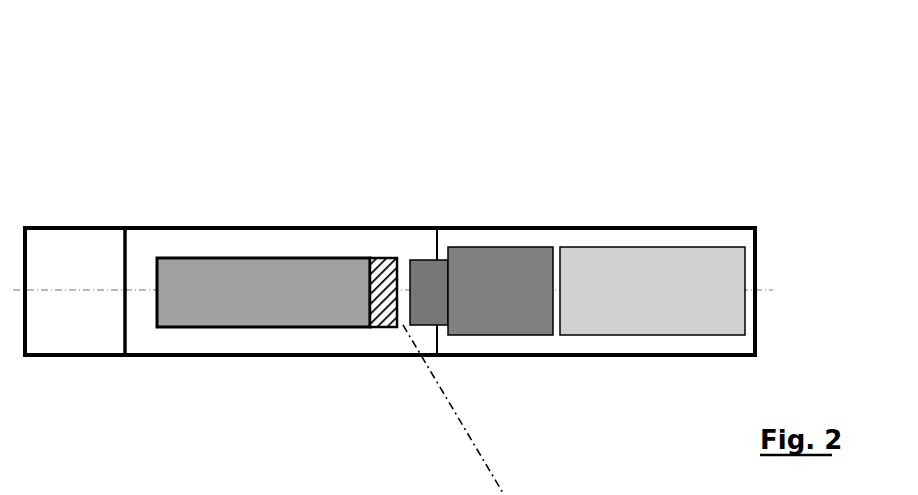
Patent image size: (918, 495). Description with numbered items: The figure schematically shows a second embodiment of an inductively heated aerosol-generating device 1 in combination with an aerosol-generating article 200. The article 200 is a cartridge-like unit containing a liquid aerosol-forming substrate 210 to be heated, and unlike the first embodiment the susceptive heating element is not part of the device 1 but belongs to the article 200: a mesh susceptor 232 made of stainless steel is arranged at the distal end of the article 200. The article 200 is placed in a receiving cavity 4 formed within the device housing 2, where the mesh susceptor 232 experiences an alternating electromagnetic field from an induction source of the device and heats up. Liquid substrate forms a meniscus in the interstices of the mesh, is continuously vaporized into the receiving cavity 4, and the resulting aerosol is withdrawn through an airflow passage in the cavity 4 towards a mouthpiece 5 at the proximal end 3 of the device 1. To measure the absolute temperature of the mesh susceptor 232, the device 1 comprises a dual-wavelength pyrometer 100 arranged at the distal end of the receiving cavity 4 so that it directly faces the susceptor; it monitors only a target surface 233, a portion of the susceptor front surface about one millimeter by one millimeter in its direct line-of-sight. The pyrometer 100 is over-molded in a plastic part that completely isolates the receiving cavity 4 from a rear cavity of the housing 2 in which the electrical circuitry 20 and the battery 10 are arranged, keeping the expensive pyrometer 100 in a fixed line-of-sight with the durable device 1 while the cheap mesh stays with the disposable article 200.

The aerosol-generating device 1 is at (185, 112).
The device housing 2 is at (647, 365).
The proximal end 3 is at (30, 388).
The receiving cavity 4 is at (236, 237).
The mouthpiece 5 is at (75, 218).
The battery 10 is at (602, 255).
The electrical circuitry 20 is at (501, 257).
The dual-wavelength pyrometer 100 is at (427, 267).
The aerosol-generating article 200 is at (223, 337).
The liquid aerosol-forming substrate 210 is at (333, 272).
The mesh susceptor 232 is at (378, 337).
The target surface 233 is at (397, 252).